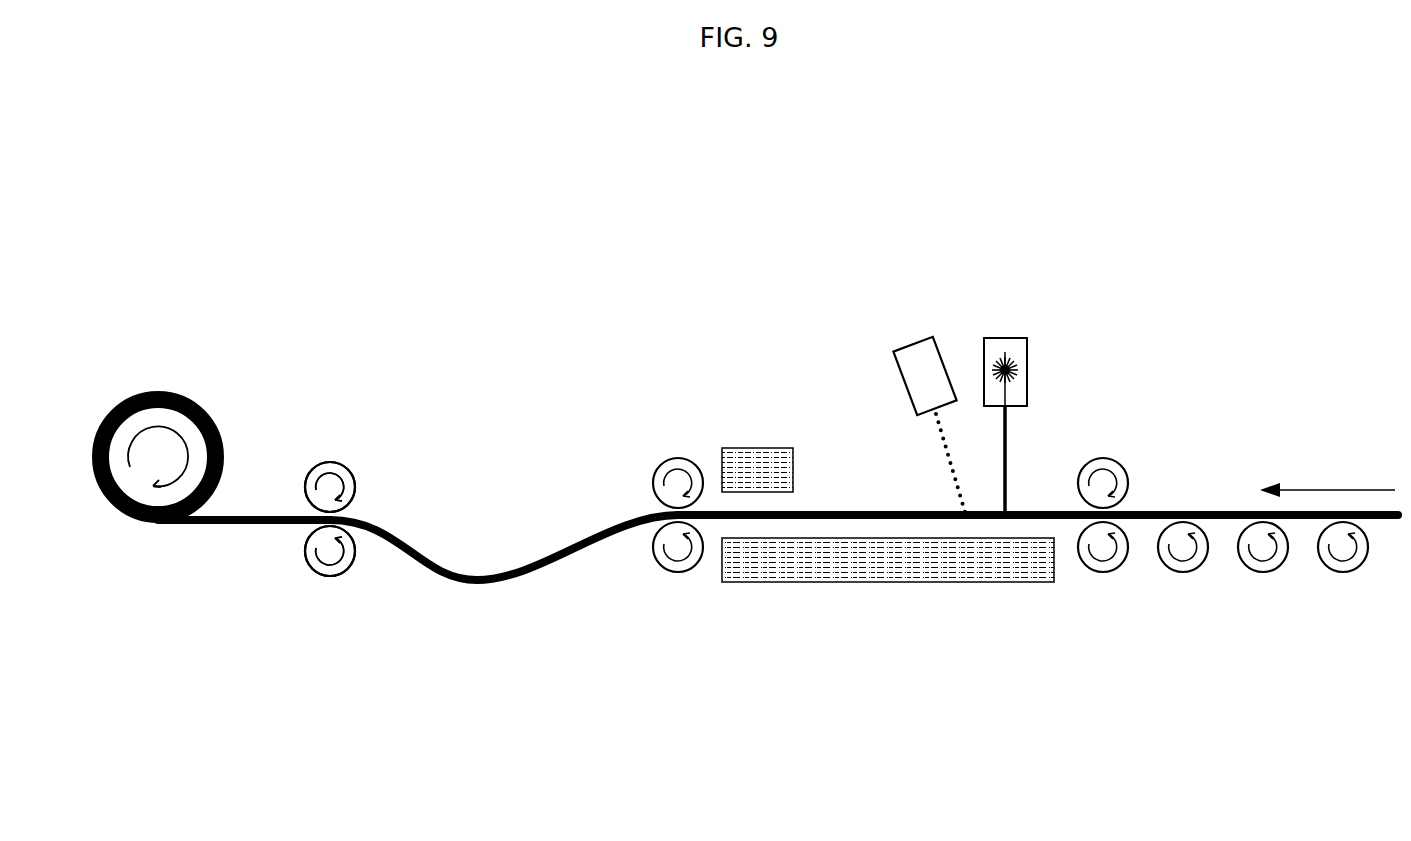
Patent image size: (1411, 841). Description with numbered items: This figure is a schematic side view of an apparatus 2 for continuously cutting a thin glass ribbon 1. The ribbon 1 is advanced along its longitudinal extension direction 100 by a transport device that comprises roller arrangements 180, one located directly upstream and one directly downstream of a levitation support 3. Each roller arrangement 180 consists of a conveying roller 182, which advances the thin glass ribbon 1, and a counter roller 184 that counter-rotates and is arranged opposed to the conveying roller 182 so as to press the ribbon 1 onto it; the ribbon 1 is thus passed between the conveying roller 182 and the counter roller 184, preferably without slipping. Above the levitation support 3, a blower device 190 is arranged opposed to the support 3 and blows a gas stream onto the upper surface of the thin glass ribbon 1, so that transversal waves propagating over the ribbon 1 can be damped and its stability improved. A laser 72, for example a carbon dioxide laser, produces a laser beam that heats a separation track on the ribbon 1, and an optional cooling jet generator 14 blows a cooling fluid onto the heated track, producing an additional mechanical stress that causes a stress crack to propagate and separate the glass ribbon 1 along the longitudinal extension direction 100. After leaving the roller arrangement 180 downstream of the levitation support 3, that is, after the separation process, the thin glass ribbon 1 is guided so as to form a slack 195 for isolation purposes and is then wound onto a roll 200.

The apparatus 2 is at (738, 110).
The roll 200 is at (155, 390).
The roller arrangement 180 is at (330, 519).
The counter roller 184 is at (1195, 316).
The conveying roller 182 is at (327, 578).
The slack 195 is at (490, 585).
The blower device 190 is at (763, 462).
The levitation support 3 is at (985, 562).
The cooling jet generator 14 is at (930, 338).
The laser 72 is at (1008, 338).
The thin glass ribbon 1 is at (1217, 512).
The longitudinal extension direction 100 is at (1325, 490).